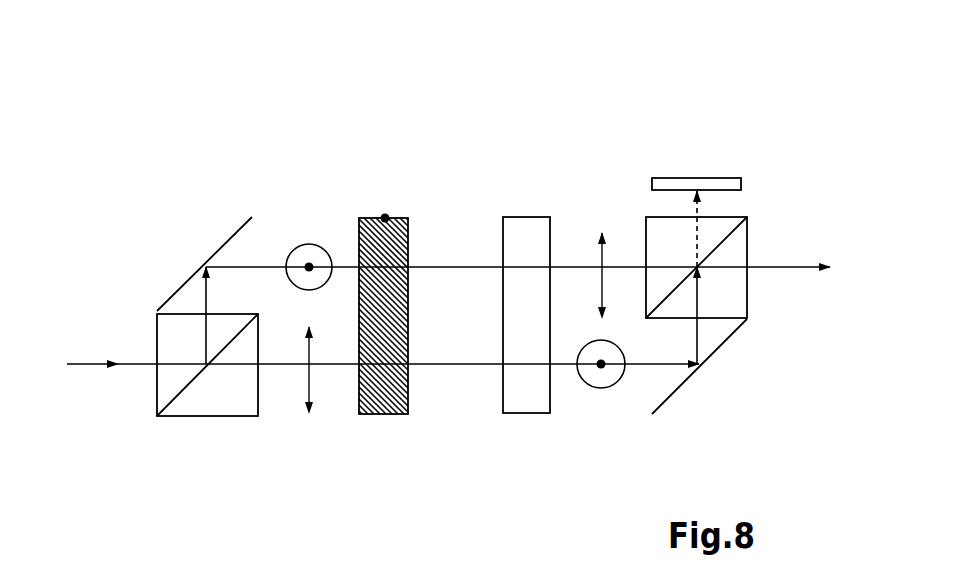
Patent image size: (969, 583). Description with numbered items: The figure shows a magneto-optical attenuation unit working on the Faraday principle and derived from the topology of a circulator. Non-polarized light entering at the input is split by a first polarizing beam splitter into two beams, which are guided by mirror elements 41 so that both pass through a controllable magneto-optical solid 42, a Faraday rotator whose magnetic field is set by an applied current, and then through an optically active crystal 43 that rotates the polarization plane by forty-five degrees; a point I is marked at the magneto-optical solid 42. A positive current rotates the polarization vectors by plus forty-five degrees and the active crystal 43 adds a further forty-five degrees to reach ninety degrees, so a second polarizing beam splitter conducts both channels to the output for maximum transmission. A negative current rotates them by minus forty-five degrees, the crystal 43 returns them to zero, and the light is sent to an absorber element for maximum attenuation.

The mirror element 41 is at (225, 244).
The controllable magneto-optical solid 42 is at (372, 233).
The intermediate image plane I is at (385, 218).
The optically active crystal 43 is at (519, 228).